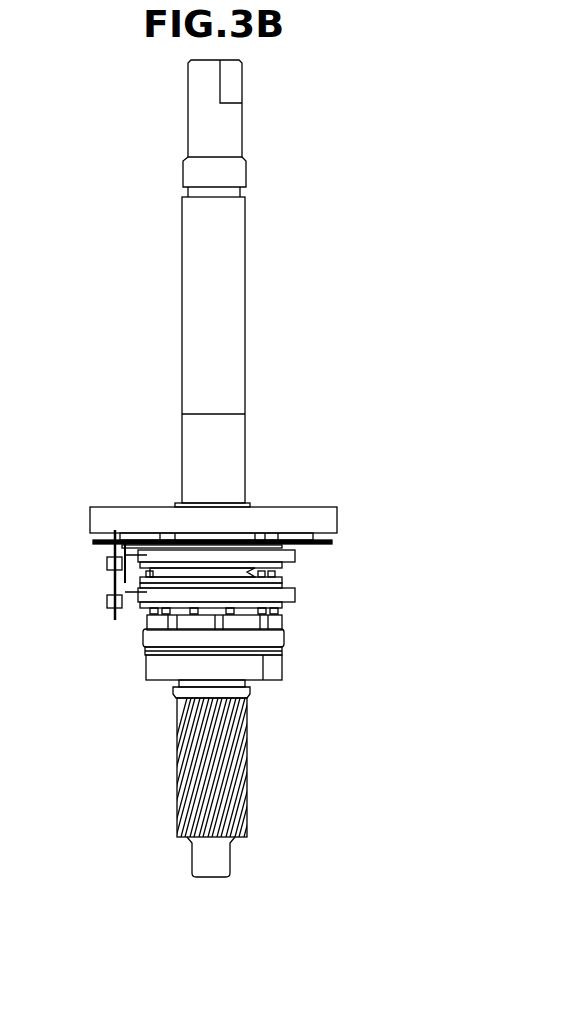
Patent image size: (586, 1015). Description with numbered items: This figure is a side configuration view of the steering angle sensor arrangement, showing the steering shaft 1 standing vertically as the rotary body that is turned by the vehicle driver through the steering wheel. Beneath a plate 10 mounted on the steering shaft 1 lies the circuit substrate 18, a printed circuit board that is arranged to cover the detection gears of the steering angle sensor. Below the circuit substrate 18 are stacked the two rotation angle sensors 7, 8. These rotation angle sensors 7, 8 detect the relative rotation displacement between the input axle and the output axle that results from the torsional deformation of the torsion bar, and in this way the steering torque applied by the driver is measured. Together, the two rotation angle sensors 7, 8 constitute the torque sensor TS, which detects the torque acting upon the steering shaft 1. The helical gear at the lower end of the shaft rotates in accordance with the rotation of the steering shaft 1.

The steering shaft 1 is at (231, 222).
The plate 10 is at (305, 517).
The circuit substrate 18 is at (327, 541).
The rotation angle sensor 7 is at (296, 556).
The rotation angle sensor 8 is at (296, 595).
The torque sensor TS is at (373, 562).